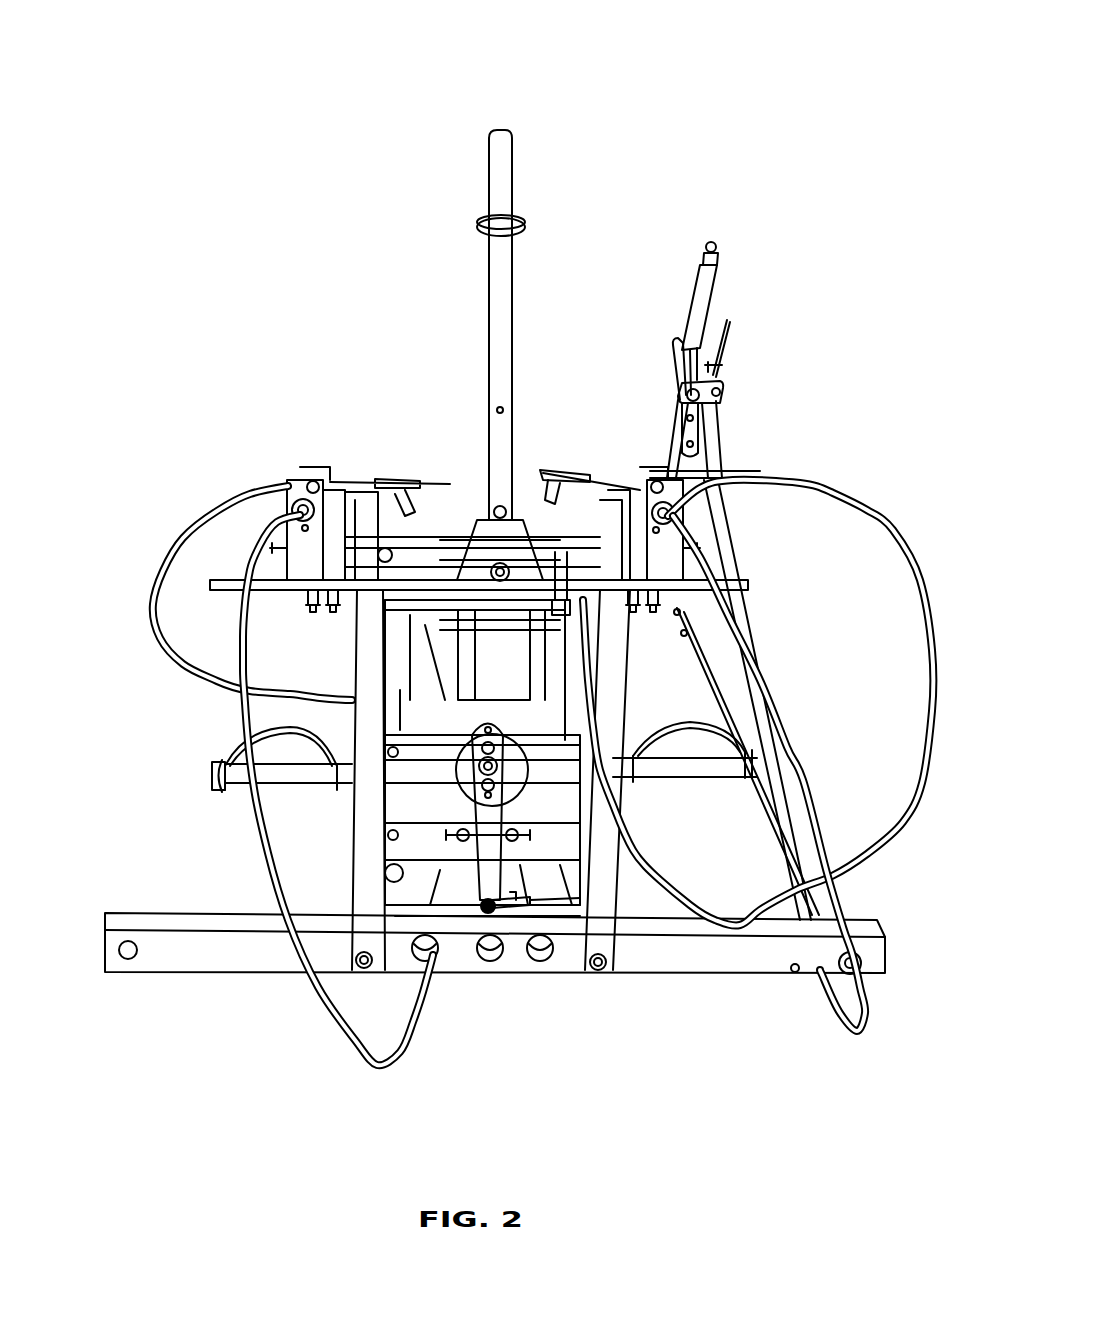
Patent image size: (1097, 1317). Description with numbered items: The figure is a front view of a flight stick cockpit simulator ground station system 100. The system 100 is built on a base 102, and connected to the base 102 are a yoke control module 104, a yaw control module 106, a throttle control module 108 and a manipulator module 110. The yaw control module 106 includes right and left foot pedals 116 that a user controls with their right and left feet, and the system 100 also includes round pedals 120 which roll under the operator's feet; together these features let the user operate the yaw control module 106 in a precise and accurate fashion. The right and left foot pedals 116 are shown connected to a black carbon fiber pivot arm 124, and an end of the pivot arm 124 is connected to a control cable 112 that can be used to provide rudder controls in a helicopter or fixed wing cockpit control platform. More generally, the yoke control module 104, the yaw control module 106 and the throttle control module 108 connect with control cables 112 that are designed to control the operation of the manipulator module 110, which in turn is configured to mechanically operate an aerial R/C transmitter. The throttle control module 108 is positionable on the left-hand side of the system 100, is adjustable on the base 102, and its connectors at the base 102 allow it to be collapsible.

The flight stick cockpit simulator ground station system 100 is at (736, 36).
The base 102 is at (888, 955).
The yoke control module 104 is at (512, 163).
The yaw control module 106 is at (238, 790).
The throttle control module 108 is at (712, 286).
The manipulator module 110 is at (750, 588).
The control cable 112 is at (152, 598).
The foot pedals 116 is at (280, 778).
The round pedals 120 is at (215, 760).
The pivot arm 124 is at (480, 882).